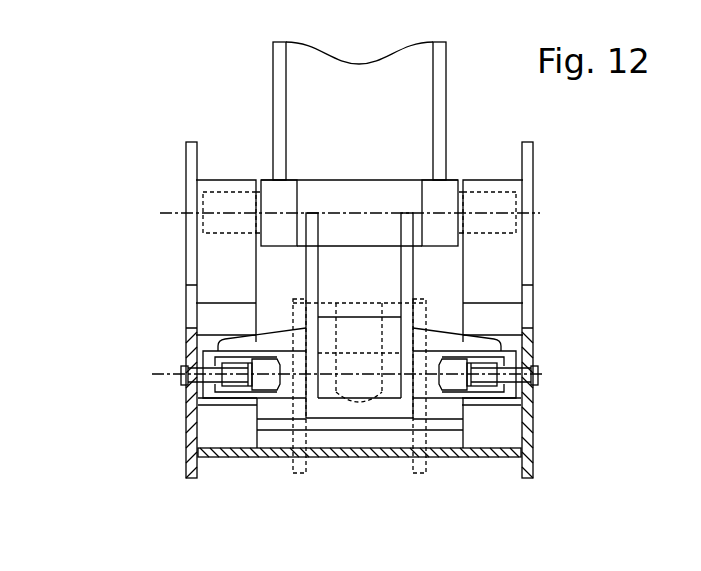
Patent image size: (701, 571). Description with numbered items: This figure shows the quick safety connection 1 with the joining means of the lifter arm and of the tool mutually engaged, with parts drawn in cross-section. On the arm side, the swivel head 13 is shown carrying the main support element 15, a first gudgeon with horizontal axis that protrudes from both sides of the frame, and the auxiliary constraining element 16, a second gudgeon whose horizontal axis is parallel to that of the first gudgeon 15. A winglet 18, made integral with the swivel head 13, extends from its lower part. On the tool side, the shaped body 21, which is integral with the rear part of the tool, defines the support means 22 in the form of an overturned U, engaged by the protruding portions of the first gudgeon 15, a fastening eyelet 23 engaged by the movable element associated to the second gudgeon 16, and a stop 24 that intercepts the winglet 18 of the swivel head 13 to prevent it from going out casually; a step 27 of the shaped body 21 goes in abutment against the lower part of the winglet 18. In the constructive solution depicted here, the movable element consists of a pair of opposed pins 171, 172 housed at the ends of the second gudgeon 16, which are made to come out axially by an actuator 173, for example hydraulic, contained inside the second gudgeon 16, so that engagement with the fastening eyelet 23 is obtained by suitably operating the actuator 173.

The quick safety connection 1 is at (85, 281).
The swivel head 13 is at (407, 282).
The main support element 15 is at (216, 226).
The auxiliary constraining element 16 is at (233, 392).
The winglet 18 is at (352, 410).
The shaped body 21 is at (188, 121).
The support means 22 is at (222, 180).
The fastening eyelet 23 is at (184, 374).
The stop 24 is at (389, 308).
The step 27 is at (393, 425).
The opposed pin 171 is at (183, 375).
The opposed pin 172 is at (531, 378).
The actuator 173 is at (265, 382).